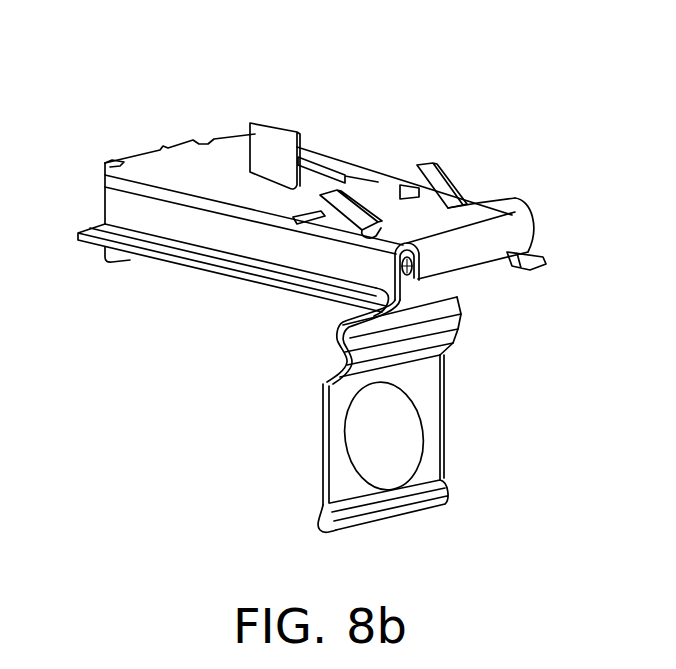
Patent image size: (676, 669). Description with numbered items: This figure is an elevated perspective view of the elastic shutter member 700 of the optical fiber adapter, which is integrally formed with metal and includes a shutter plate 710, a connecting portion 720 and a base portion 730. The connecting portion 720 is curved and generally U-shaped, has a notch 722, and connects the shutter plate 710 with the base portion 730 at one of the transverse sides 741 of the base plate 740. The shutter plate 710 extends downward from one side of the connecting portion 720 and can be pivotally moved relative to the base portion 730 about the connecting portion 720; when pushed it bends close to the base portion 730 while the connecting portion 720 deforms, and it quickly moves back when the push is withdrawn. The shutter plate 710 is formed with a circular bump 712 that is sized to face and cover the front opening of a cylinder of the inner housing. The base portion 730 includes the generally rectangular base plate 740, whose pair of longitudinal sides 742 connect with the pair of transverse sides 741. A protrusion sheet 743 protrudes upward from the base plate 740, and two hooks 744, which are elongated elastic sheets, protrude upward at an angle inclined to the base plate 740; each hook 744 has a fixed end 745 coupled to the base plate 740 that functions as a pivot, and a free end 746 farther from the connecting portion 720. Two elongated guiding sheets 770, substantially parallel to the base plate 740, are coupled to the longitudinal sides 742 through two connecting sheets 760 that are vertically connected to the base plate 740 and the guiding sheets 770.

The shutter member 700 is at (446, 105).
The base portion 730 is at (179, 108).
The base plate 740 is at (170, 168).
The transverse sides 741 is at (465, 218).
The longitudinal sides 742 is at (190, 195).
The protrusion sheet 743 is at (273, 143).
The hooks 744 is at (400, 165).
The fixed end 745 is at (400, 165).
The free end 746 is at (330, 193).
The connecting sheets 760 is at (220, 233).
The guiding sheets 770 is at (285, 275).
The connecting portion 720 is at (500, 291).
The notch 722 is at (341, 342).
The shutter plate 710 is at (473, 414).
The circular bump 712 is at (380, 454).